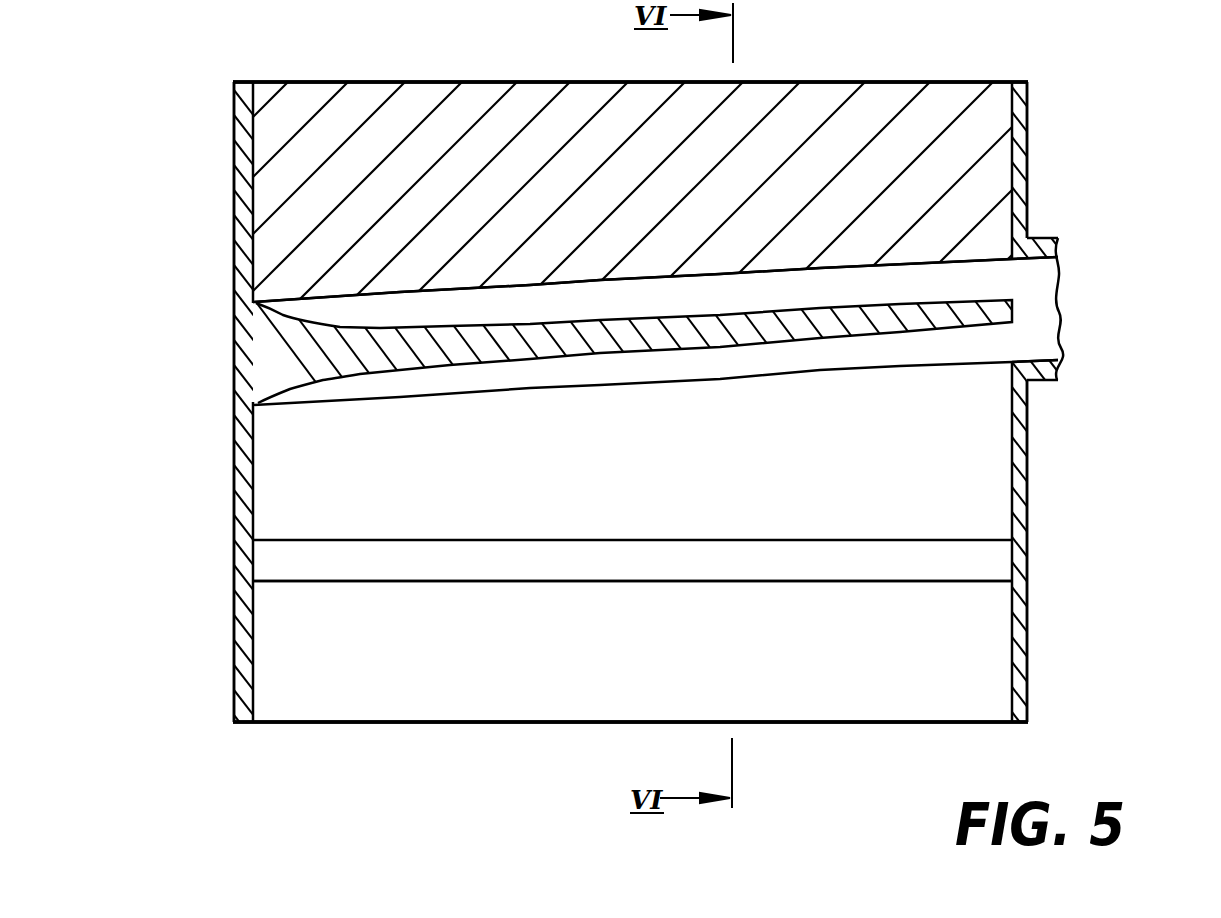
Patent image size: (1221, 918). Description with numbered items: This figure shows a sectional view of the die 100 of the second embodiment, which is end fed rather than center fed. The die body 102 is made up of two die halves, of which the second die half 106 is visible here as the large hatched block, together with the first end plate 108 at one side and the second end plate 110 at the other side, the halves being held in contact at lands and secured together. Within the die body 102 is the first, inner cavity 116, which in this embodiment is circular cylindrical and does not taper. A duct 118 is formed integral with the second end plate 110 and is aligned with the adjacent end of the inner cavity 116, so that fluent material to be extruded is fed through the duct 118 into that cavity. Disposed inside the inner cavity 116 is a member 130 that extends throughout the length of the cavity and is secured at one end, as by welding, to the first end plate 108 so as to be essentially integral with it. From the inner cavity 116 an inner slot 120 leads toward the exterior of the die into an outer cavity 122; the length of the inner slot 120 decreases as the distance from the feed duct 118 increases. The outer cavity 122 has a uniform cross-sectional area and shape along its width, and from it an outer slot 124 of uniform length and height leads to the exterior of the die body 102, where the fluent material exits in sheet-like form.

The die 100 is at (1072, 120).
The die body 102 is at (885, 82).
The second die half 106 is at (483, 97).
The first end plate 108 is at (233, 561).
The second end plate 110 is at (1029, 548).
The inner cavity 116 is at (688, 310).
The duct 118 is at (1040, 279).
The inner slot 120 is at (673, 459).
The outer cavity 122 is at (694, 576).
The outer slot 124 is at (618, 672).
The member 130 is at (888, 339).